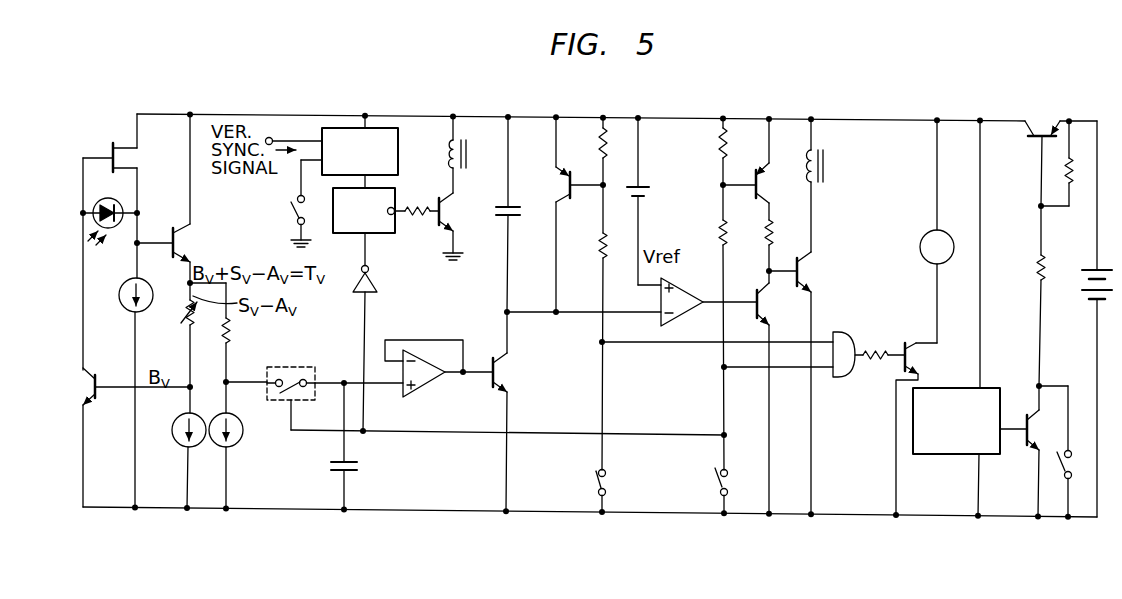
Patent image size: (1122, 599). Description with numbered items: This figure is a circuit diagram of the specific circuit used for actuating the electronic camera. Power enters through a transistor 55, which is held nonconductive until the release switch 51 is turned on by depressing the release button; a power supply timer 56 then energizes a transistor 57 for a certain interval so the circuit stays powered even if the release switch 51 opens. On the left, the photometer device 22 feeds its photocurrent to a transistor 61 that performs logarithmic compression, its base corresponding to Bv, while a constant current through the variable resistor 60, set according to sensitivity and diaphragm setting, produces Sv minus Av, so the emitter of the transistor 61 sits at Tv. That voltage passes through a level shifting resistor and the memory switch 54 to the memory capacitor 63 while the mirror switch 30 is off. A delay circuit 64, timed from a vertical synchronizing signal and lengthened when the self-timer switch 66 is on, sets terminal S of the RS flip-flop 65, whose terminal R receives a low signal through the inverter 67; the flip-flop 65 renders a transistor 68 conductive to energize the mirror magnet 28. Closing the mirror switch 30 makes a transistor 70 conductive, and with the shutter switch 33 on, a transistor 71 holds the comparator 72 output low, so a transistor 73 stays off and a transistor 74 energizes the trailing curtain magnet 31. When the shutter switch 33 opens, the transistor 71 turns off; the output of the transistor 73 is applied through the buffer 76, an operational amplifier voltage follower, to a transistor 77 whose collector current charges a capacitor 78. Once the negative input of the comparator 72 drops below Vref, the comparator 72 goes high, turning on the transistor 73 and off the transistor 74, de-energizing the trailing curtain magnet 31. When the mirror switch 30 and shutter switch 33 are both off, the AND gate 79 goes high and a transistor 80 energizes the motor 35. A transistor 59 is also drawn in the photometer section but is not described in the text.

The photometer device 22 is at (118, 203).
The mirror magnet 28 is at (458, 137).
The mirror switch 30 is at (714, 487).
The trailing curtain magnet 31 is at (825, 177).
The shutter switch 33 is at (606, 485).
The motor 35 is at (921, 256).
The release switch 51 is at (1058, 467).
The memory switch 54 is at (283, 367).
The transistor 55 is at (1037, 133).
The power supply timer 56 is at (983, 387).
The transistor 57 is at (1023, 436).
The transistor 59 is at (98, 378).
The variable resistor 60 is at (194, 318).
The transistor 61 is at (184, 244).
The memory capacitor 63 is at (357, 465).
The delay circuit 64 is at (379, 128).
The RS flip-flop 65 is at (377, 234).
The self-timer switch 66 is at (293, 199).
The inverter 67 is at (377, 290).
The transistor 68 is at (450, 216).
The transistor 70 is at (767, 183).
The transistor 71 is at (560, 176).
The comparator 72 is at (683, 310).
The transistor 73 is at (766, 307).
The transistor 74 is at (804, 273).
The buffer 76 is at (426, 385).
The transistor 77 is at (508, 369).
The capacitor 78 is at (517, 211).
The AND gate 79 is at (843, 336).
The transistor 80 is at (906, 343).